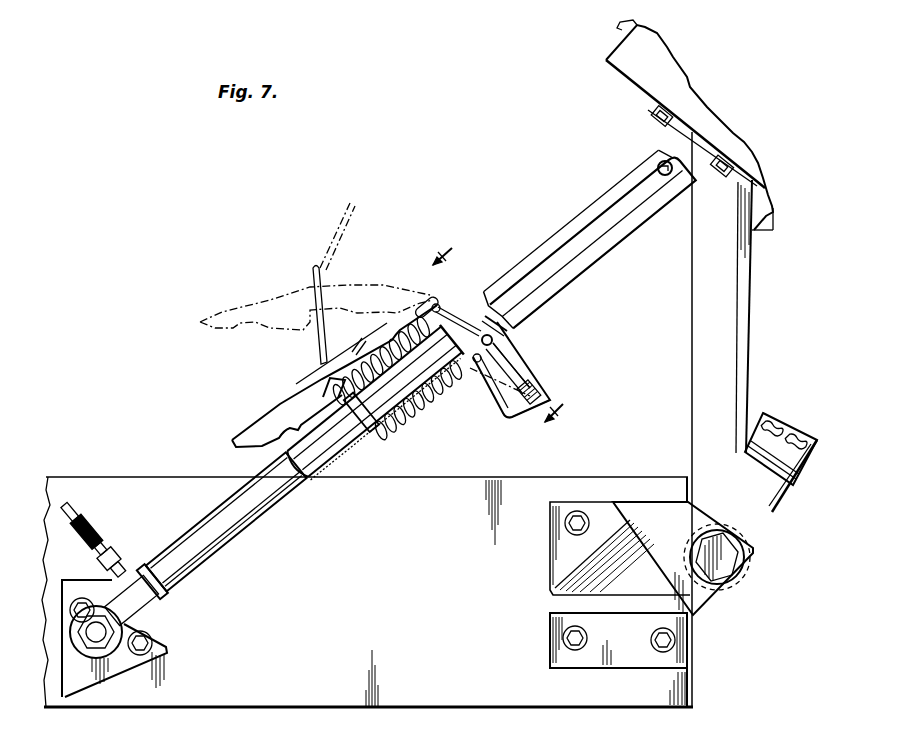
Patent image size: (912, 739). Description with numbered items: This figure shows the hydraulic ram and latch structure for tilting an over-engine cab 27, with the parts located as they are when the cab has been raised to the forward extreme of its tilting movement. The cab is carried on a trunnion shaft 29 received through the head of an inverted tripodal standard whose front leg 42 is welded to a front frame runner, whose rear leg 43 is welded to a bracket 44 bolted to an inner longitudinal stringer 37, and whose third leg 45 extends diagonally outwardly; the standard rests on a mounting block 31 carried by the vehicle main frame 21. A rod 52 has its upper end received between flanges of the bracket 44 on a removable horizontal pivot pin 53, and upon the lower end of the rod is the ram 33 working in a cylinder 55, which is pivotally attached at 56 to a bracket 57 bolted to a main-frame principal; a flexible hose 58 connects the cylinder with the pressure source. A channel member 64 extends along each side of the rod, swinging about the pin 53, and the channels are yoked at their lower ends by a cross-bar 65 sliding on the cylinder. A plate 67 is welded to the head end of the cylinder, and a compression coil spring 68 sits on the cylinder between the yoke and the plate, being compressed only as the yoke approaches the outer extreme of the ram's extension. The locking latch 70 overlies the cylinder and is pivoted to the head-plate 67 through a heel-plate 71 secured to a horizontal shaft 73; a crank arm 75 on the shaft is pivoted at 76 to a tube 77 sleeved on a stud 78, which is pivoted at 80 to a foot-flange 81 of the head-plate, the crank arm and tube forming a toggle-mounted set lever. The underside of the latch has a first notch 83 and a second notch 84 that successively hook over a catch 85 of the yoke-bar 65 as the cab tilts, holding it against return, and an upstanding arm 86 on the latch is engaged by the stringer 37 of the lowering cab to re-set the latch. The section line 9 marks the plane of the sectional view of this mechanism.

The section line 9- 9 is at (501, 335).
The base plate 21 is at (487, 486).
The over-engine cab 27 is at (731, 128).
The trunnion shaft 29 is at (734, 582).
The mounting block 31 is at (688, 644).
The hydraulic ram 33 is at (366, 440).
The inner longitudinal stringer 37 is at (627, 28).
The front leg 42 is at (797, 430).
The rear leg 43 is at (733, 298).
The bracket 44 is at (656, 120).
The third leg 45 is at (786, 420).
The rod 52 is at (492, 304).
The pivot pin 53 is at (658, 168).
The cylinder 55 is at (258, 518).
The pivotal attachment 56 is at (102, 632).
The bracket 57 is at (128, 670).
The flexible hose 58 is at (76, 508).
The channel member 64 is at (578, 226).
The cross-bar 65 is at (381, 442).
The plate 67 is at (504, 395).
The compression coil spring 68 is at (425, 402).
The locking latch 70 is at (262, 405).
The heel-plate 71 is at (408, 316).
The horizontal shaft 73 is at (439, 306).
The crank arm 75 is at (461, 325).
The pivot 76 is at (493, 338).
The tube 77 is at (512, 358).
The stud 78 is at (482, 376).
The pivot 80 is at (540, 394).
The foot-flange 81 is at (522, 417).
The first notch 83 is at (277, 447).
The second notch 84 is at (322, 386).
The catch 85 is at (353, 352).
The upstanding arm 86 is at (315, 270).